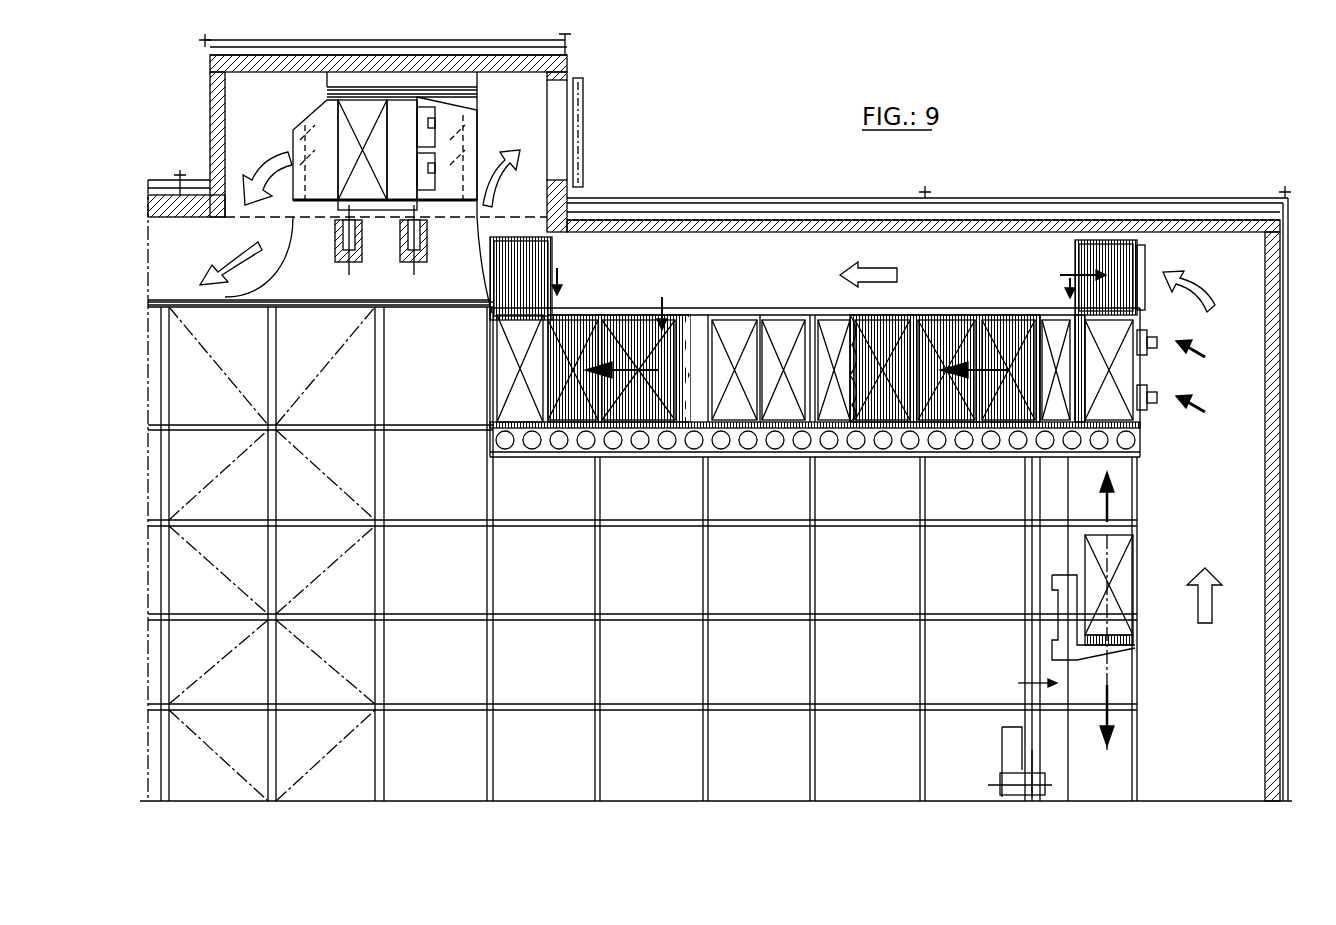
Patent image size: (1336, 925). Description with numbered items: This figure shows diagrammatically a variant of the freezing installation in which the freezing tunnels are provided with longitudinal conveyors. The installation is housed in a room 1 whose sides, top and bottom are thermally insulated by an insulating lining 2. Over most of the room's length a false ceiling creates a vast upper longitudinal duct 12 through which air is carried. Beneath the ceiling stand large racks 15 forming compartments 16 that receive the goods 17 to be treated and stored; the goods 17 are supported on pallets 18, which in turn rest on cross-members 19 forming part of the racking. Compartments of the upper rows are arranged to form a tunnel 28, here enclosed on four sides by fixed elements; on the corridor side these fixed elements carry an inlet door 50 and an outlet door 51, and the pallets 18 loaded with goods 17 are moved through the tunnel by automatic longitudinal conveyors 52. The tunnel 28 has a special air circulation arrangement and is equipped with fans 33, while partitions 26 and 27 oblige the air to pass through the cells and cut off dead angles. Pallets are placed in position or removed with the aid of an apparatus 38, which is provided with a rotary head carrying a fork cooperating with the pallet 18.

The room 1 is at (1287, 300).
The insulating lining 2 is at (1272, 458).
The upper longitudinal duct 12 is at (686, 278).
The rack 15 is at (934, 576).
The compartment 16 is at (550, 582).
The goods 17 is at (781, 332).
The pallet 18 is at (720, 455).
The cross-member 19 is at (980, 526).
The partition 26 is at (478, 252).
The partition 27 is at (317, 110).
The tunnel 28 is at (893, 322).
The fan 33 is at (1147, 380).
The apparatus 38 is at (1048, 667).
The inlet door 50 is at (1125, 265).
The outlet door 51 is at (540, 262).
The automatic longitudinal conveyor 52 is at (782, 457).